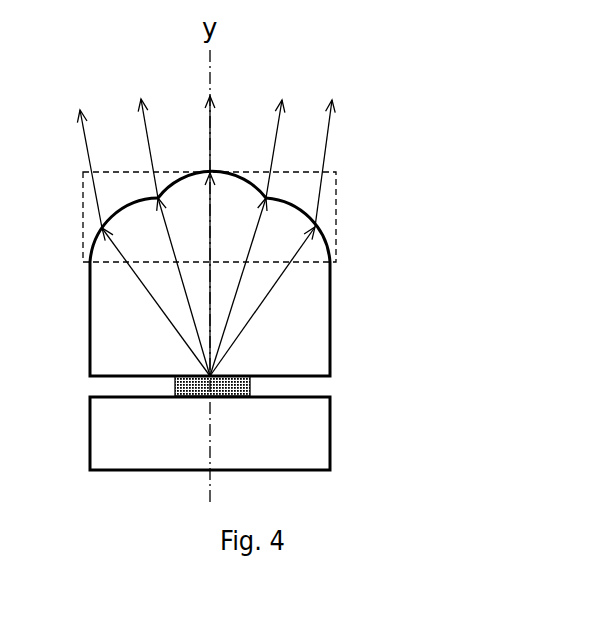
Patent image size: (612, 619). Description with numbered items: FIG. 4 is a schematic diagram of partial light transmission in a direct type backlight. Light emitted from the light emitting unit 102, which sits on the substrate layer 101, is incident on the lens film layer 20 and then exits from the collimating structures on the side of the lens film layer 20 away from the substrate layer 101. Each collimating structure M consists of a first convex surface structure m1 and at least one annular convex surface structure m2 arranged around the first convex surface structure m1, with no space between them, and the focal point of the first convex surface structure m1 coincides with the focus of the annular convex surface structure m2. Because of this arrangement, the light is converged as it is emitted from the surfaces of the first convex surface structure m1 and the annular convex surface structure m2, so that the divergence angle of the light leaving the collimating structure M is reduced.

The lens film layer 20 is at (270, 254).
The first convex surface structure m1 is at (285, 165).
The annular convex surface structure m2 is at (253, 212).
The collimating structure M is at (340, 215).
The light emitting unit 102 is at (307, 402).
The substrate layer 101 is at (330, 450).